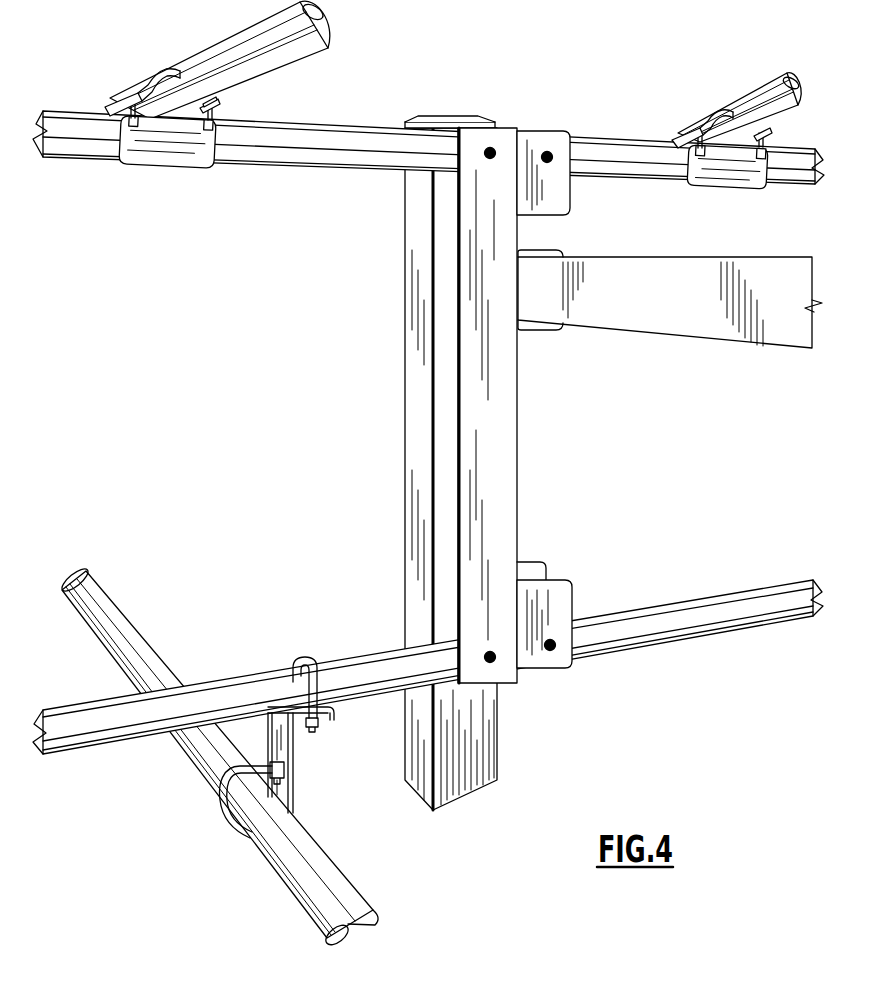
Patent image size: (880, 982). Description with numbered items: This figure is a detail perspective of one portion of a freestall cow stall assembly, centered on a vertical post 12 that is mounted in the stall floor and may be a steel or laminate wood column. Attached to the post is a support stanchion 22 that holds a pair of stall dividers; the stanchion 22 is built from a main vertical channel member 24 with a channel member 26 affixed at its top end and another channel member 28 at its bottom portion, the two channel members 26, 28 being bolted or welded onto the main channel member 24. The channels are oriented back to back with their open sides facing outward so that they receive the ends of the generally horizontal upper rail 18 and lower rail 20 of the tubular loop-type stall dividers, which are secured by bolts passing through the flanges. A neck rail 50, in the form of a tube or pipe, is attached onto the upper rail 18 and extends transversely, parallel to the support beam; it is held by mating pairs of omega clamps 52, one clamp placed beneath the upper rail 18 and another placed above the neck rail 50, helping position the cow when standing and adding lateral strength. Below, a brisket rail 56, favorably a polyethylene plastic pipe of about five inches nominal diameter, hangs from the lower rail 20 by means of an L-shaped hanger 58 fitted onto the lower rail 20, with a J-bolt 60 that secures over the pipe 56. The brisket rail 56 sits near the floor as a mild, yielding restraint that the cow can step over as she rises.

The vertical post 12 is at (418, 393).
The upper rail 18 is at (280, 158).
The lower rail 20 is at (108, 737).
The support stanchion 22 is at (540, 387).
The main vertical channel member 24 is at (508, 410).
The channel member 26 is at (530, 140).
The channel member 28 is at (562, 600).
The neck rail 50 is at (250, 50).
The omega clamp 52 is at (137, 88).
The brisket rail 56 is at (310, 893).
The L-shaped hanger 58 is at (296, 742).
The J-bolt 60 is at (222, 810).